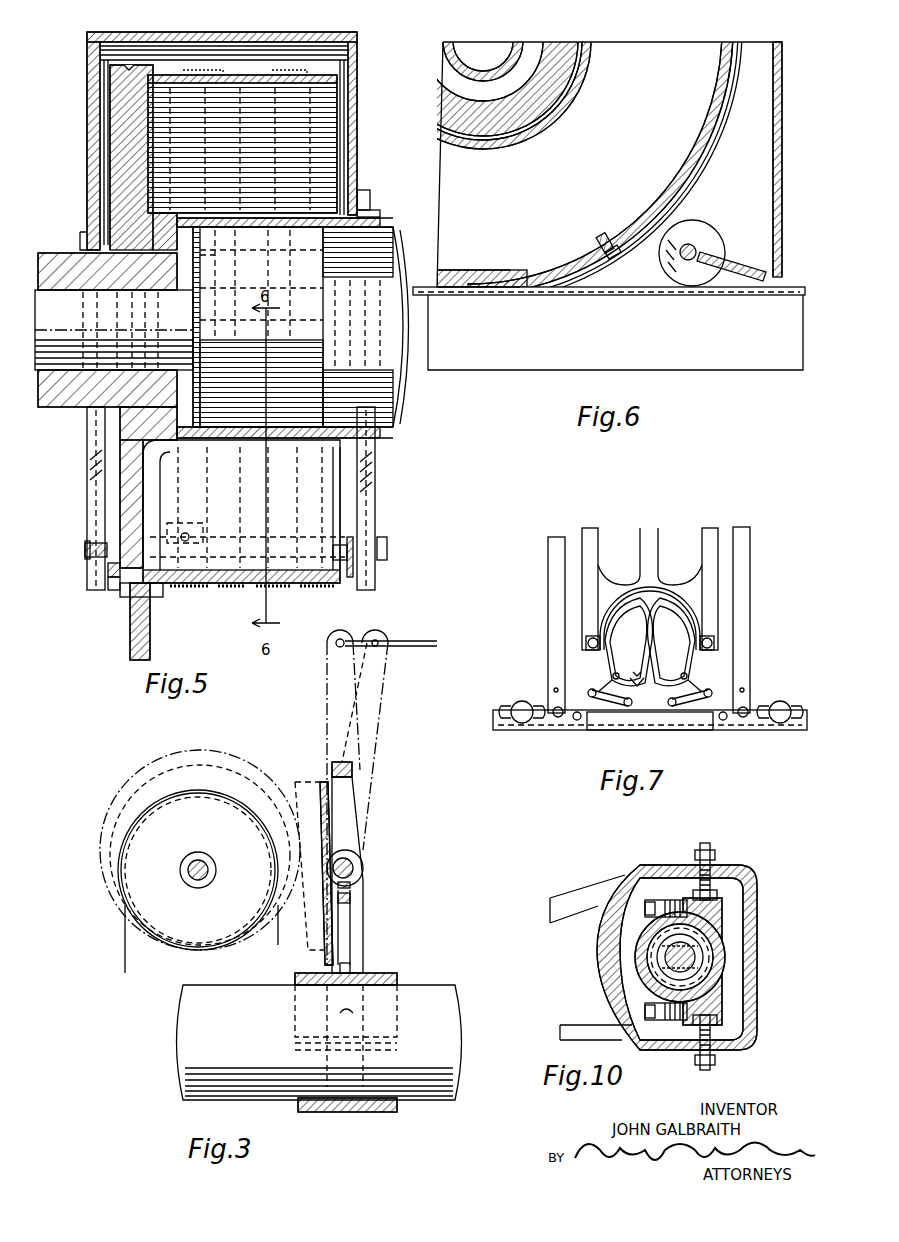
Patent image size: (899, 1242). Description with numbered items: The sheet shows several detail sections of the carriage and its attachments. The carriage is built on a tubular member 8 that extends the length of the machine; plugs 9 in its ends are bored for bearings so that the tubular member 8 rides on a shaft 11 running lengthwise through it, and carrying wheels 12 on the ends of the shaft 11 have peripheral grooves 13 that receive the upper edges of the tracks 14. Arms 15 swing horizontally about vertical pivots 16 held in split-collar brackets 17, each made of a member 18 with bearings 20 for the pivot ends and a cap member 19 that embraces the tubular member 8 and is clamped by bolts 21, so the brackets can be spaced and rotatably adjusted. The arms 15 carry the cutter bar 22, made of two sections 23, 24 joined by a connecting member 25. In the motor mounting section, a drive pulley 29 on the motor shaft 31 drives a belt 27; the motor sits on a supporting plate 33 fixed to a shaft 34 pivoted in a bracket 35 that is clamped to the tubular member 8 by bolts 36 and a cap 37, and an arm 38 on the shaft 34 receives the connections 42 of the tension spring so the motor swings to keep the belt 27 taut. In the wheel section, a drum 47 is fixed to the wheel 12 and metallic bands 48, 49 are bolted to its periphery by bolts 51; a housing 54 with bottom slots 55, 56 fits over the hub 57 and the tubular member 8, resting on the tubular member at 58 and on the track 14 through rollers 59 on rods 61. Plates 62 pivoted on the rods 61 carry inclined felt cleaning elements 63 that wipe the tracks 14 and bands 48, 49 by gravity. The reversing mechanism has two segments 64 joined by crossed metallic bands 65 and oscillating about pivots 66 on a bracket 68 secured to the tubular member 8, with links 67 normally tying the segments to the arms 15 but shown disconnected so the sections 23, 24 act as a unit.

In FIG. 5, the tubular member 8 is at (400, 440).
In FIG. 6, the tubular member 8 is at (589, 75).
In FIG. 10, the tubular member 8 is at (640, 968).
In FIG. 3, the tubular member 8 is at (450, 997).
In FIG. 5, the plugs 9 is at (323, 398).
In FIG. 6, the plugs 9 is at (556, 42).
In FIG. 10, the plugs 9 is at (700, 968).
In FIG. 5, the shaft 11 is at (372, 352).
In FIG. 6, the shaft 11 is at (497, 42).
In FIG. 10, the shaft 11 is at (692, 957).
In FIG. 5, the carrying wheels 12 is at (128, 487).
In FIG. 5, the peripheral grooves 13 is at (131, 66).
In FIG. 5, the tracks 14 is at (132, 640).
In FIG. 6, the tracks 14 is at (732, 362).
In FIG. 7, the arms 15 is at (550, 583).
In FIG. 10, the arms 15 is at (582, 897).
In FIG. 10, the vertical pivots 16 is at (710, 847).
In FIG. 10, the brackets 17 is at (737, 905).
In FIG. 10, the member 18 is at (725, 935).
In FIG. 10, the cap member 19 is at (635, 952).
In FIG. 10, the bearings 20 is at (712, 890).
In FIG. 10, the bolts 21 is at (643, 908).
In FIG. 7, the cutter bar 22 is at (544, 748).
In FIG. 7, the cutter bar section 23 is at (520, 730).
In FIG. 7, the cutter bar section 24 is at (777, 730).
In FIG. 7, the connecting member 25 is at (600, 730).
In FIG. 3, the belt 27 is at (125, 955).
In FIG. 3, the drive pulley 29 is at (133, 850).
In FIG. 3, the motor shaft 31 is at (209, 866).
In FIG. 3, the supporting plate 33 is at (318, 778).
In FIG. 3, the shaft 34 is at (362, 867).
In FIG. 3, the bracket 35 is at (343, 828).
In FIG. 3, the bolts 36 is at (328, 1112).
In FIG. 3, the cap 37 is at (370, 1112).
In FIG. 3, the arm 38 is at (383, 690).
In FIG. 3, the connections 42 is at (420, 643).
In FIG. 5, the drum 47 is at (332, 78).
In FIG. 6, the drum 47 is at (729, 42).
In FIG. 5, the metallic band 48 is at (185, 588).
In FIG. 5, the metallic band 49 is at (292, 588).
In FIG. 6, the metallic band 49 is at (728, 152).
In FIG. 5, the bolts 51 is at (185, 533).
In FIG. 6, the bolts 51 is at (612, 262).
In FIG. 5, the housing 54 is at (92, 178).
In FIG. 5, the slot 55 is at (90, 462).
In FIG. 5, the slot 56 is at (370, 505).
In FIG. 5, the hub 57 is at (50, 258).
In FIG. 5, the housing support 58 is at (371, 205).
In FIG. 5, the rollers 59 is at (115, 592).
In FIG. 6, the rollers 59 is at (705, 232).
In FIG. 5, the rods 61 is at (388, 550).
In FIG. 6, the rods 61 is at (697, 252).
In FIG. 5, the plates 62 is at (352, 542).
In FIG. 6, the plates 62 is at (744, 270).
In FIG. 5, the cleaning element 63 is at (110, 570).
In FIG. 6, the cleaning element 63 is at (752, 282).
In FIG. 7, the segments 64 is at (650, 683).
In FIG. 7, the metallic bands 65 is at (662, 625).
In FIG. 7, the pivots 66 is at (588, 643).
In FIG. 7, the links 67 is at (626, 706).
In FIG. 7, the bracket 68 is at (655, 543).